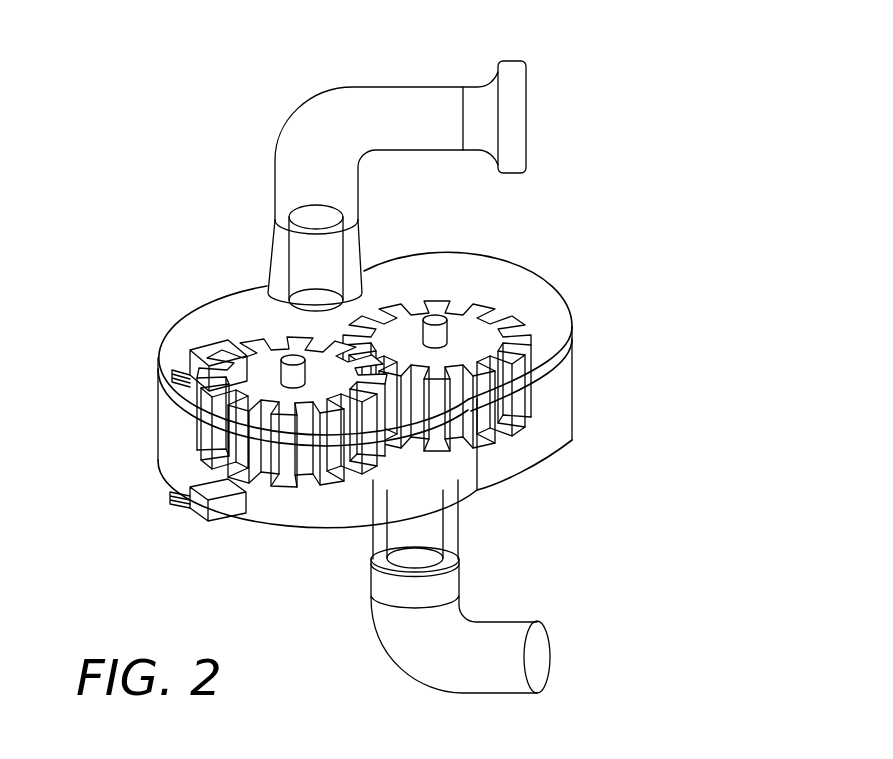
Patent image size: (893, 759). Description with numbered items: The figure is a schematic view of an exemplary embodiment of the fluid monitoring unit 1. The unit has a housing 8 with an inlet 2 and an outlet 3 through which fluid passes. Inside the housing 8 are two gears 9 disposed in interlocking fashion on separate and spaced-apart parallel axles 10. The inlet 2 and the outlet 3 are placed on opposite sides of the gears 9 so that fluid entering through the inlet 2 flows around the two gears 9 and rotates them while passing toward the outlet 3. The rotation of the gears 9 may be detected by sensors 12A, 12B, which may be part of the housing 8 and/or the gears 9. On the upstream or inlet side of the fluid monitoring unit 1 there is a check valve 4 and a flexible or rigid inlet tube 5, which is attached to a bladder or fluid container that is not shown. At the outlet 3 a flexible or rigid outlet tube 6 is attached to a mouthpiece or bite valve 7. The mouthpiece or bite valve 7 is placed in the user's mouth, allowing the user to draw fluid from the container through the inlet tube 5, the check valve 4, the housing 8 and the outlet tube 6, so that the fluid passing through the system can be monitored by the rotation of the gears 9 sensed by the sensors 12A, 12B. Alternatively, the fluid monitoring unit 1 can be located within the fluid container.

The fluid monitoring unit 1 is at (626, 210).
The inlet 2 is at (436, 530).
The outlet 3 is at (297, 215).
The check valve 4 is at (371, 562).
The inlet tube 5 is at (412, 653).
The outlet tube 6 is at (312, 113).
The mouthpiece or bite valve 7 is at (517, 103).
The housing 8 is at (572, 338).
The gears 9 is at (438, 405).
The axles 10 is at (295, 358).
The sensor 12A is at (200, 352).
The sensor 12B is at (207, 522).